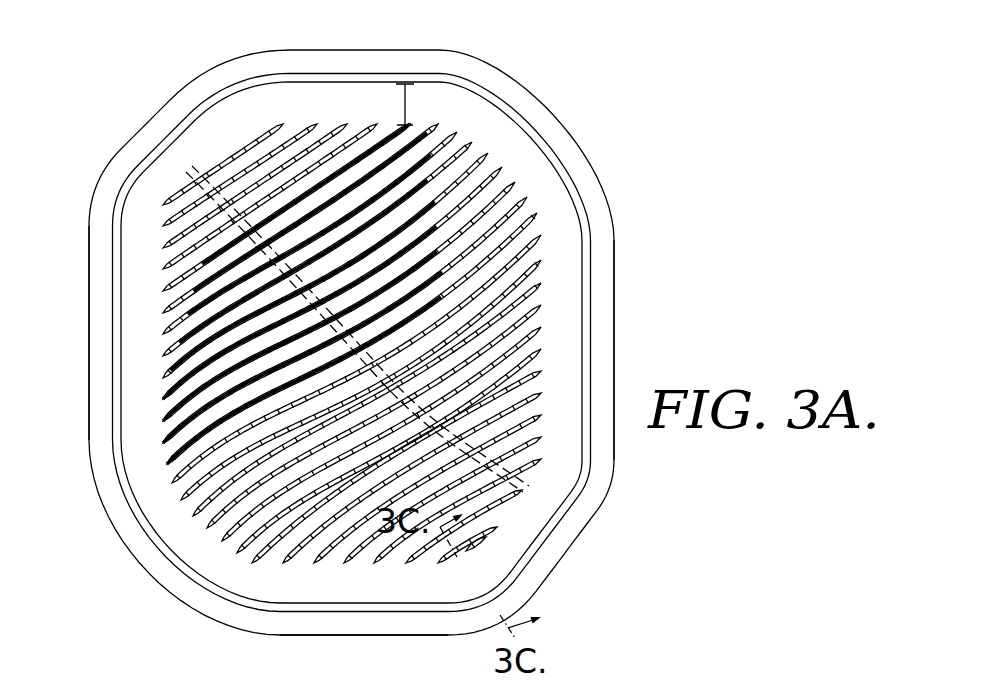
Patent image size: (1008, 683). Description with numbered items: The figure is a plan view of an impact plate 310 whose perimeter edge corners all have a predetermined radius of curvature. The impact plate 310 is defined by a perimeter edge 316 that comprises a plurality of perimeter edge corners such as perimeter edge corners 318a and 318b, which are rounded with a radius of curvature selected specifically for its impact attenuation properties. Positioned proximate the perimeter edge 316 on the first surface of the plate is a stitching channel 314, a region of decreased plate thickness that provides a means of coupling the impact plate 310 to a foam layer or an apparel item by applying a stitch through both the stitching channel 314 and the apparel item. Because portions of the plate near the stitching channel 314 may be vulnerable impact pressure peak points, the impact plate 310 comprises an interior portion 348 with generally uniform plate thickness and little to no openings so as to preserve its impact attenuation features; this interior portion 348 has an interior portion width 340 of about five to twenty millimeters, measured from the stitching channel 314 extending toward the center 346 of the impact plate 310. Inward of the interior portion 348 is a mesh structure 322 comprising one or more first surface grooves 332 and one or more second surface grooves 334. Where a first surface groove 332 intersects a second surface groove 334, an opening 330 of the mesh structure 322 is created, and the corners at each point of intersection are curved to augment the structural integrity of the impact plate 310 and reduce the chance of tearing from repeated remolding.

The impact plate 310 is at (574, 69).
The stitching channel 314 is at (591, 318).
The perimeter edge 316 is at (299, 641).
The perimeter edge corner 318a is at (605, 511).
The perimeter edge corner 318b is at (195, 76).
The mesh structure 322 is at (548, 224).
The opening 330 is at (420, 561).
The first surface groove 332 is at (167, 467).
The second surface groove 334 is at (337, 340).
The interior portion width 340 is at (406, 103).
The center 346 is at (323, 292).
The interior portion 348 is at (358, 108).